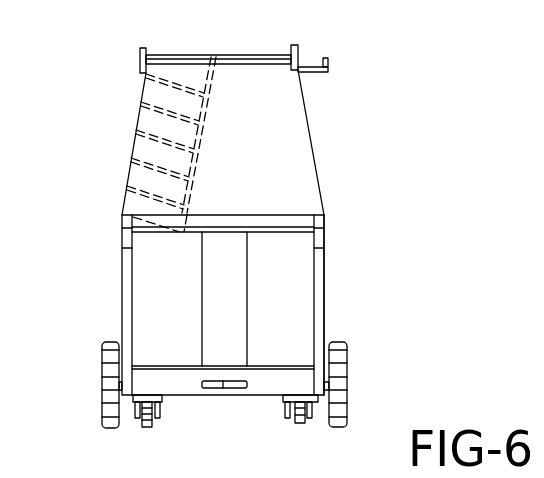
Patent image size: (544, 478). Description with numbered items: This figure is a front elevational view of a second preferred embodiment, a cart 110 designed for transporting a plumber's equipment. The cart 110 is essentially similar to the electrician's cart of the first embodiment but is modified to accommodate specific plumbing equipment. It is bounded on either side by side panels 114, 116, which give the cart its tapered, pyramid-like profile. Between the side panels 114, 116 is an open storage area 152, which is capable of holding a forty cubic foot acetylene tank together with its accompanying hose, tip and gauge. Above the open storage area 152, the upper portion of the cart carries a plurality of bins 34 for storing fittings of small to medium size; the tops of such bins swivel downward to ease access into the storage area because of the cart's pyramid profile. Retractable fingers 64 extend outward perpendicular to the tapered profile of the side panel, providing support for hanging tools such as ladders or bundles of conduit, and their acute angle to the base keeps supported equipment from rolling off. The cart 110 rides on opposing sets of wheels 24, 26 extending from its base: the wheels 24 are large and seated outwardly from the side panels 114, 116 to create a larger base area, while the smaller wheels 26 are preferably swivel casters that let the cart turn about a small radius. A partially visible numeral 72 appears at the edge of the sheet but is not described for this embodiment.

The cart 110 is at (405, 182).
The bins 34 is at (138, 119).
The retractable fingers 64 is at (328, 72).
The side panel 114 is at (122, 281).
The open storage area 152 is at (247, 288).
The side panel 116 is at (327, 335).
The wheels 24 is at (103, 362).
The wheels 26 is at (152, 422).
The partial numeral 72 is at (533, 64).